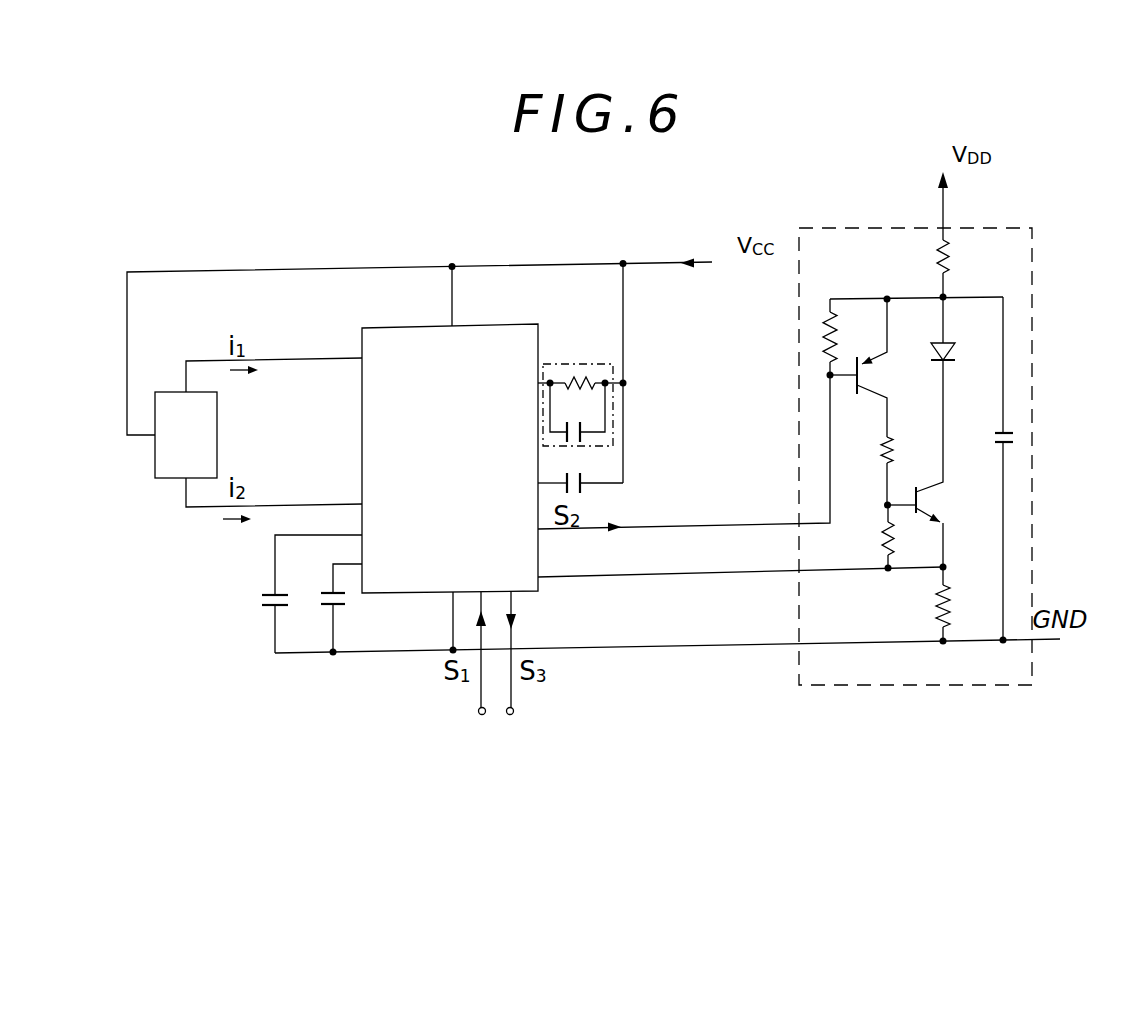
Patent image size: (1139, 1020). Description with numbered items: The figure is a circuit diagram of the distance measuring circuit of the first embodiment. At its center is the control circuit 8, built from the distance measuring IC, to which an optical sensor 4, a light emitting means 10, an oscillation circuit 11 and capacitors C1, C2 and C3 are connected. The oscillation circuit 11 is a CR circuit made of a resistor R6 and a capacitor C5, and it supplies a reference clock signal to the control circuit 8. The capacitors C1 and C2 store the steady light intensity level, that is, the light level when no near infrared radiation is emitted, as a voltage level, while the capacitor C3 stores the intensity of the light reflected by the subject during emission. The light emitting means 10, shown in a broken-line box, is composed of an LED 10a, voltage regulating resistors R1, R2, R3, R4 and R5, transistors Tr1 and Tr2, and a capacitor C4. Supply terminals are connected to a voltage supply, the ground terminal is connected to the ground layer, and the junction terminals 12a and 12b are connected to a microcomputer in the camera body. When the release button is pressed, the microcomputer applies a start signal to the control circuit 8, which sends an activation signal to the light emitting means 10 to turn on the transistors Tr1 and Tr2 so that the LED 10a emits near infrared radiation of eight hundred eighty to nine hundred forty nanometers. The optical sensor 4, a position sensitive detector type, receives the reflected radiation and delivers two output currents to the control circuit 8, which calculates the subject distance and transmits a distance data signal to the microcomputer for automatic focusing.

The optical sensor 4 is at (217, 422).
The control circuit 8 is at (502, 324).
The light emitting means 10 is at (1033, 247).
The LED 10a is at (968, 352).
The oscillation circuit 11 is at (613, 366).
The junction terminal 12a is at (480, 699).
The junction terminal 12b is at (514, 698).
The voltage regulating resistor R1 is at (946, 247).
The voltage regulating resistor R2 is at (825, 333).
The voltage regulating resistor R3 is at (888, 443).
The voltage regulating resistor R4 is at (887, 527).
The voltage regulating resistor R5 is at (934, 605).
The resistor R6 is at (577, 378).
The capacitor C1 is at (257, 613).
The capacitor C2 is at (323, 612).
The capacitor C3 is at (588, 481).
The capacitor C4 is at (1012, 437).
The capacitor C5 is at (588, 427).
The transistor Tr1 is at (857, 357).
The transistor Tr2 is at (914, 515).